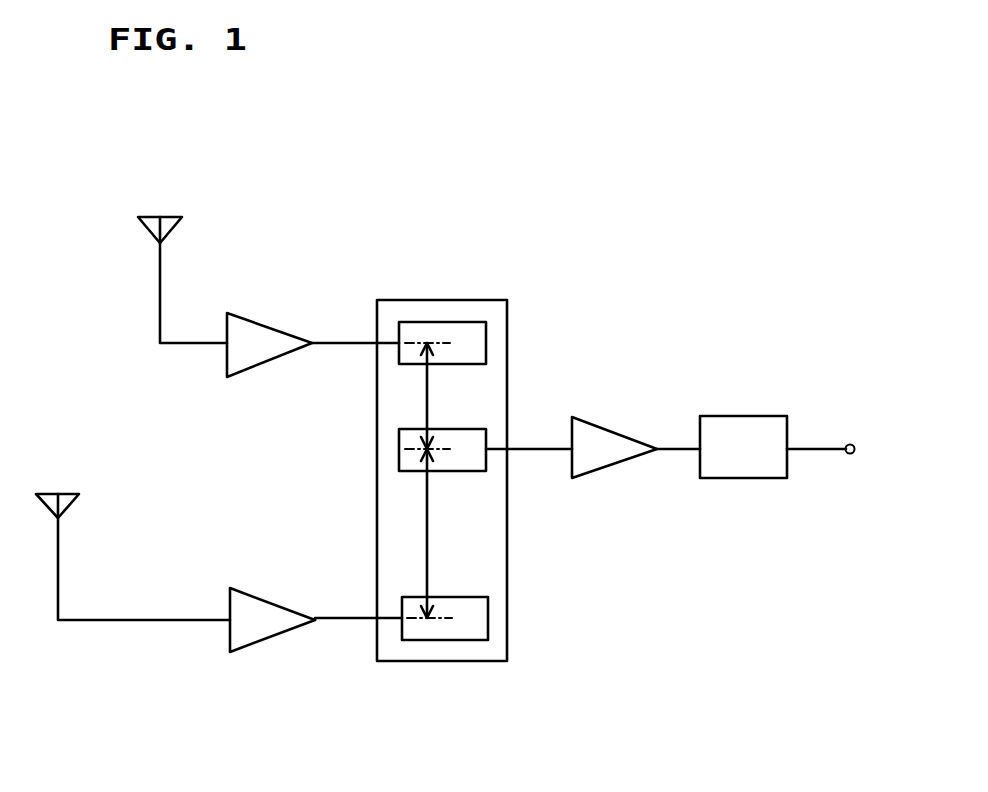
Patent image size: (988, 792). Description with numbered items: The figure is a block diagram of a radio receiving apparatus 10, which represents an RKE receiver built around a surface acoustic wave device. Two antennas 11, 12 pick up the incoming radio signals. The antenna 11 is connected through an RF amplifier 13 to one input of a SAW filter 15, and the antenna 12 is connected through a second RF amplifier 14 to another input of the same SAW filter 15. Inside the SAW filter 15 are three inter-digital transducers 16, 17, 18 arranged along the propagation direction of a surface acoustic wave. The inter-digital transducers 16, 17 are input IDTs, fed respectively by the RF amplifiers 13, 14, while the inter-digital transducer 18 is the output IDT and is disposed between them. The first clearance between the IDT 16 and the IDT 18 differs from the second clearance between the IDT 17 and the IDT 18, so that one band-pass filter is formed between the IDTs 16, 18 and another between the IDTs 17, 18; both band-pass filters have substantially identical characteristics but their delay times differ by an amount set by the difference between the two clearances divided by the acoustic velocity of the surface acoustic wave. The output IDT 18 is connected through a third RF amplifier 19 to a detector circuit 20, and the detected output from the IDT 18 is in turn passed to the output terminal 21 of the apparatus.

The radio receiving apparatus 10 is at (661, 242).
The antenna 11 is at (167, 220).
The antenna 12 is at (68, 495).
The RF amplifier 13 is at (258, 343).
The RF amplifier 14 is at (262, 620).
The SAW filter 15 is at (420, 300).
The inter-digital transducer 16 is at (463, 342).
The inter-digital transducer 17 is at (472, 629).
The inter-digital transducer 18 is at (465, 460).
The RF amplifier 19 is at (603, 447).
The detector circuit 20 is at (738, 430).
The output terminal 21 is at (851, 440).